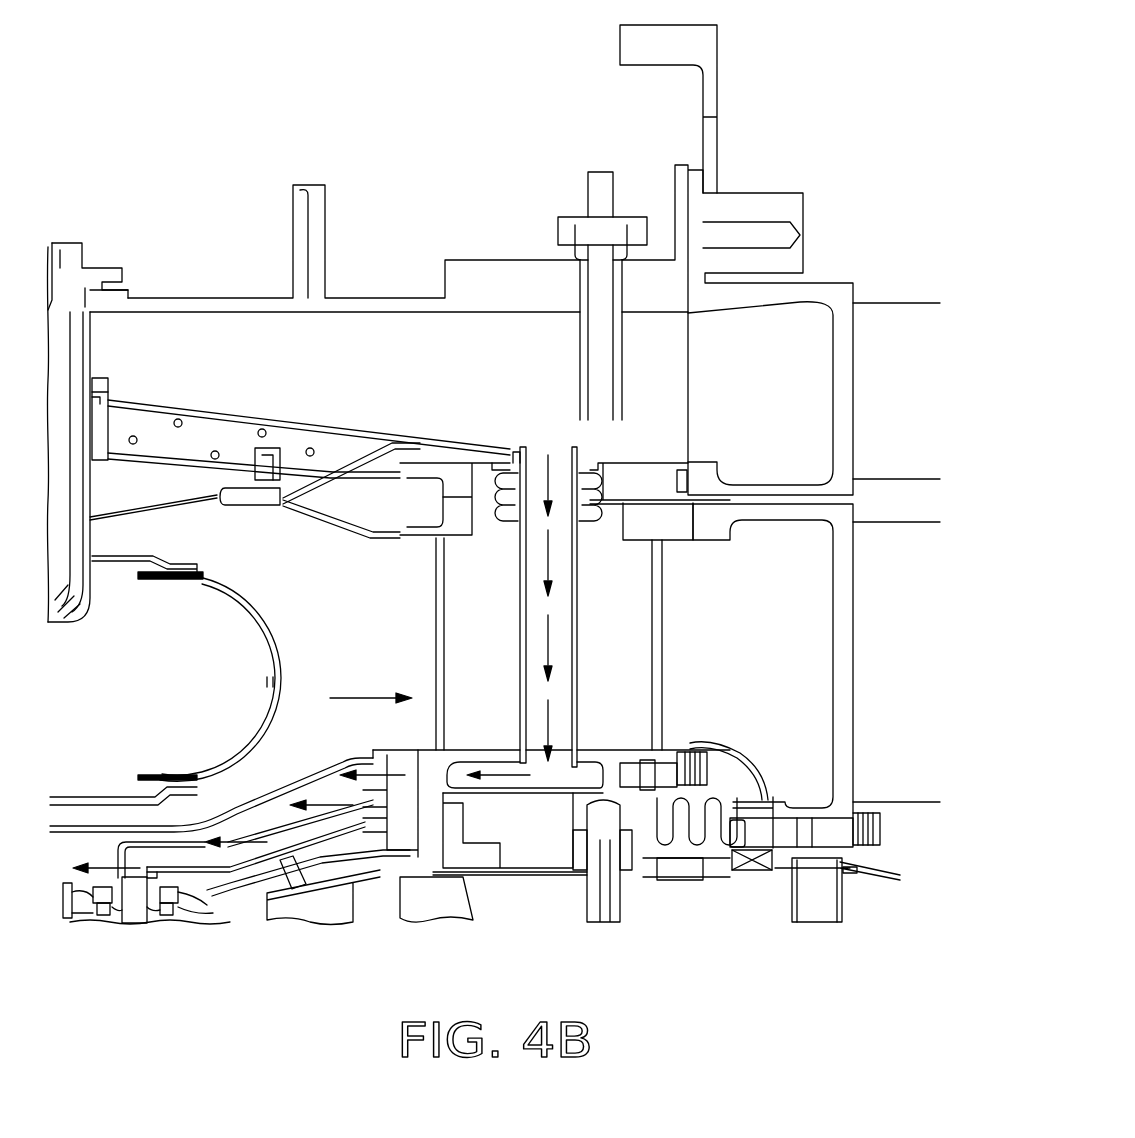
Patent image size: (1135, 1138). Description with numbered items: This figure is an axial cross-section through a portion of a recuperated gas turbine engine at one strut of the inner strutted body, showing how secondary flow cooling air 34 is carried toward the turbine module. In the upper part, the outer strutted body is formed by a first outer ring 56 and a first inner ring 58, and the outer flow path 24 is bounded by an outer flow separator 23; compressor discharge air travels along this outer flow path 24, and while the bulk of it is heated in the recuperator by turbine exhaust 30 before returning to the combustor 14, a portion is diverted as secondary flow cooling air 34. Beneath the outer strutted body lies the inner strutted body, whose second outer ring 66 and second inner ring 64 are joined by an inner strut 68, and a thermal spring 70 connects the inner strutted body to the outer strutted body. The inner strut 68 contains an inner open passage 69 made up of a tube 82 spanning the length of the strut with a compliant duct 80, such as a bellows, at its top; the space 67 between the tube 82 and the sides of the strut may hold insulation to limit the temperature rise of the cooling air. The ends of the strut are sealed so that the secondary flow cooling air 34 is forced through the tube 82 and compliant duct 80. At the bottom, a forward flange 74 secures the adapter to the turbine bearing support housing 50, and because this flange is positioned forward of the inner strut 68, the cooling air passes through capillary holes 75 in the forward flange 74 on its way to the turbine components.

The combustor 14 is at (185, 685).
The outer flow separator 23 is at (143, 400).
The outer flow path 24 is at (302, 383).
The turbine exhaust 30 is at (269, 797).
The secondary flow cooling air 34 is at (546, 570).
The turbine bearing support housing 50 is at (320, 868).
The first outer ring 56 is at (487, 283).
The first inner ring 58 is at (461, 483).
The second inner ring 64 is at (657, 748).
The second outer ring 66 is at (638, 530).
The space 67 is at (630, 723).
The inner strut 68 is at (664, 646).
The inner open passage 69 is at (558, 620).
The thermal spring 70 is at (347, 527).
The forward flange 74 is at (433, 828).
The capillary holes 75 is at (462, 778).
The compliant duct 80 is at (602, 497).
The tube 82 is at (574, 640).